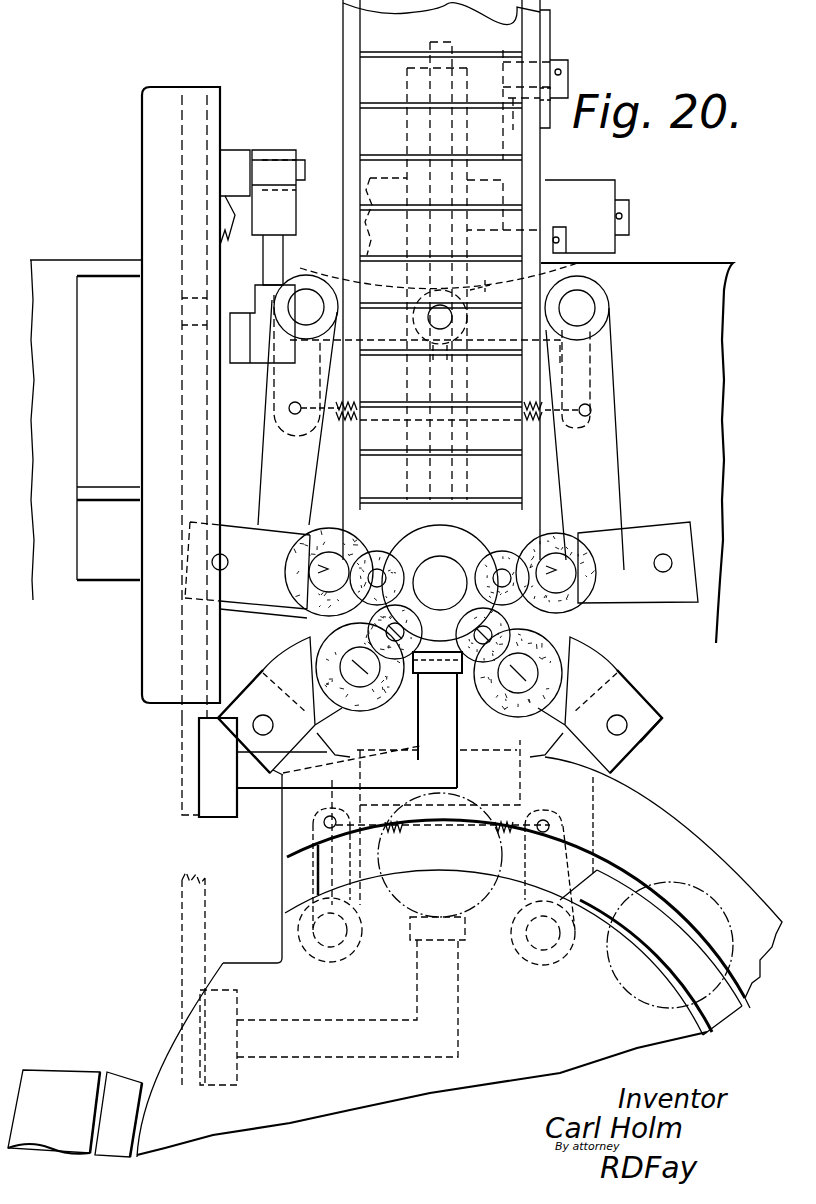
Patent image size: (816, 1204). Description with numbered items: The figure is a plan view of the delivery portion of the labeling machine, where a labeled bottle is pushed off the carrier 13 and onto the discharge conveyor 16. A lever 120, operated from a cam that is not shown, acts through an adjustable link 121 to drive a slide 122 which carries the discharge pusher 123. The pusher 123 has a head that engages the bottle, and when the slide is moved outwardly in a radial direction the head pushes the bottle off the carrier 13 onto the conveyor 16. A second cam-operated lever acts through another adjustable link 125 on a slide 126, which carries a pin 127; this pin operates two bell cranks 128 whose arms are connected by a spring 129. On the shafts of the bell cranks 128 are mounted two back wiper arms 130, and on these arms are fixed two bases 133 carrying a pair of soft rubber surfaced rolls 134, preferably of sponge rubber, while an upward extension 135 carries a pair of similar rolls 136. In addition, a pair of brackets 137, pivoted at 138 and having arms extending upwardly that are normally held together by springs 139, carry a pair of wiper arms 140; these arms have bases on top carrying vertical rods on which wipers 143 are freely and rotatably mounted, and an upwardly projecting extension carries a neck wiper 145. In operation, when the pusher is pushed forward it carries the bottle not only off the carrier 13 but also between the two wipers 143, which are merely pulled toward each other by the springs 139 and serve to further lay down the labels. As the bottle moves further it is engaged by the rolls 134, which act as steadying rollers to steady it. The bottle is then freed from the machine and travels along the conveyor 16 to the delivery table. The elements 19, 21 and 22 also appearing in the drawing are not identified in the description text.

The carrier 13 is at (128, 1080).
The discharge conveyor 16 is at (504, 30).
The plate 19 is at (68, 1080).
The direction arrow 21 is at (94, 209).
The section line 22 is at (406, 284).
The lever 120 is at (230, 220).
The adjustable link 121 is at (280, 248).
The slide 122 is at (192, 744).
The discharge pusher 123 is at (437, 742).
The adjustable link 125 is at (516, 163).
The slide 126 is at (442, 132).
The pin 127 is at (454, 319).
The bell cranks 128 is at (380, 378).
The spring 129 is at (470, 420).
The back wiper arms 130 is at (245, 484).
The bases 133 is at (258, 592).
The soft rubber surfaced rolls 134 is at (285, 565).
The upward extension 135 is at (345, 565).
The rolls 136 is at (401, 556).
The brackets 137 is at (648, 708).
The pivot 138 is at (335, 940).
The springs 139 is at (457, 830).
The wiper arms 140 is at (290, 664).
The wipers 143 is at (364, 706).
The neck wiper 145 is at (405, 634).